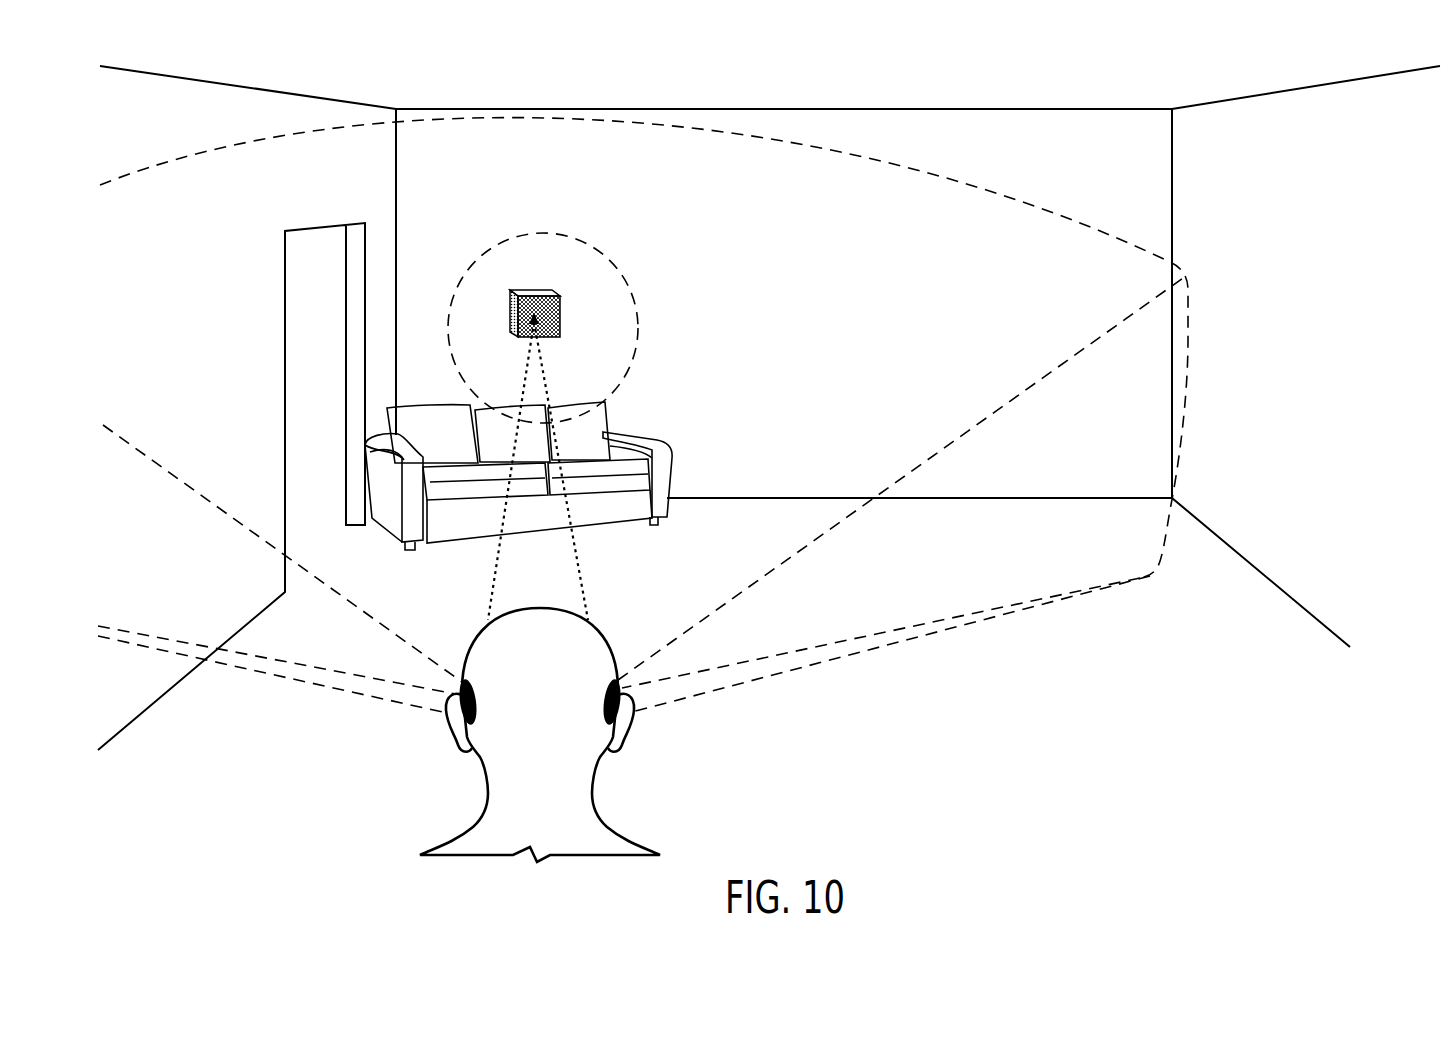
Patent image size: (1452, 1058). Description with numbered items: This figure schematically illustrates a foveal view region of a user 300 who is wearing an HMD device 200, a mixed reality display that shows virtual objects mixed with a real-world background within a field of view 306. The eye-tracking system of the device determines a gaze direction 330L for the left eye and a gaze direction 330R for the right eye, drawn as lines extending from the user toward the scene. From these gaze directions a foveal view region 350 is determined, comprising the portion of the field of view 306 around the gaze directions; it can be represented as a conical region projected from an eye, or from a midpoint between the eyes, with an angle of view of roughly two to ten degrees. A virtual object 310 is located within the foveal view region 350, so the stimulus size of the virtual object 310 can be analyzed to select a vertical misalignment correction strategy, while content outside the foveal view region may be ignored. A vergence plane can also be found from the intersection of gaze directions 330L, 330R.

The field of view 306 is at (1003, 193).
The foveal view region 350 is at (545, 233).
The virtual object 310 is at (532, 290).
The gaze direction for the left eye 330L is at (494, 586).
The gaze direction for the right eye 330R is at (582, 582).
The user 300 is at (523, 709).
The HMD device 200 is at (462, 742).